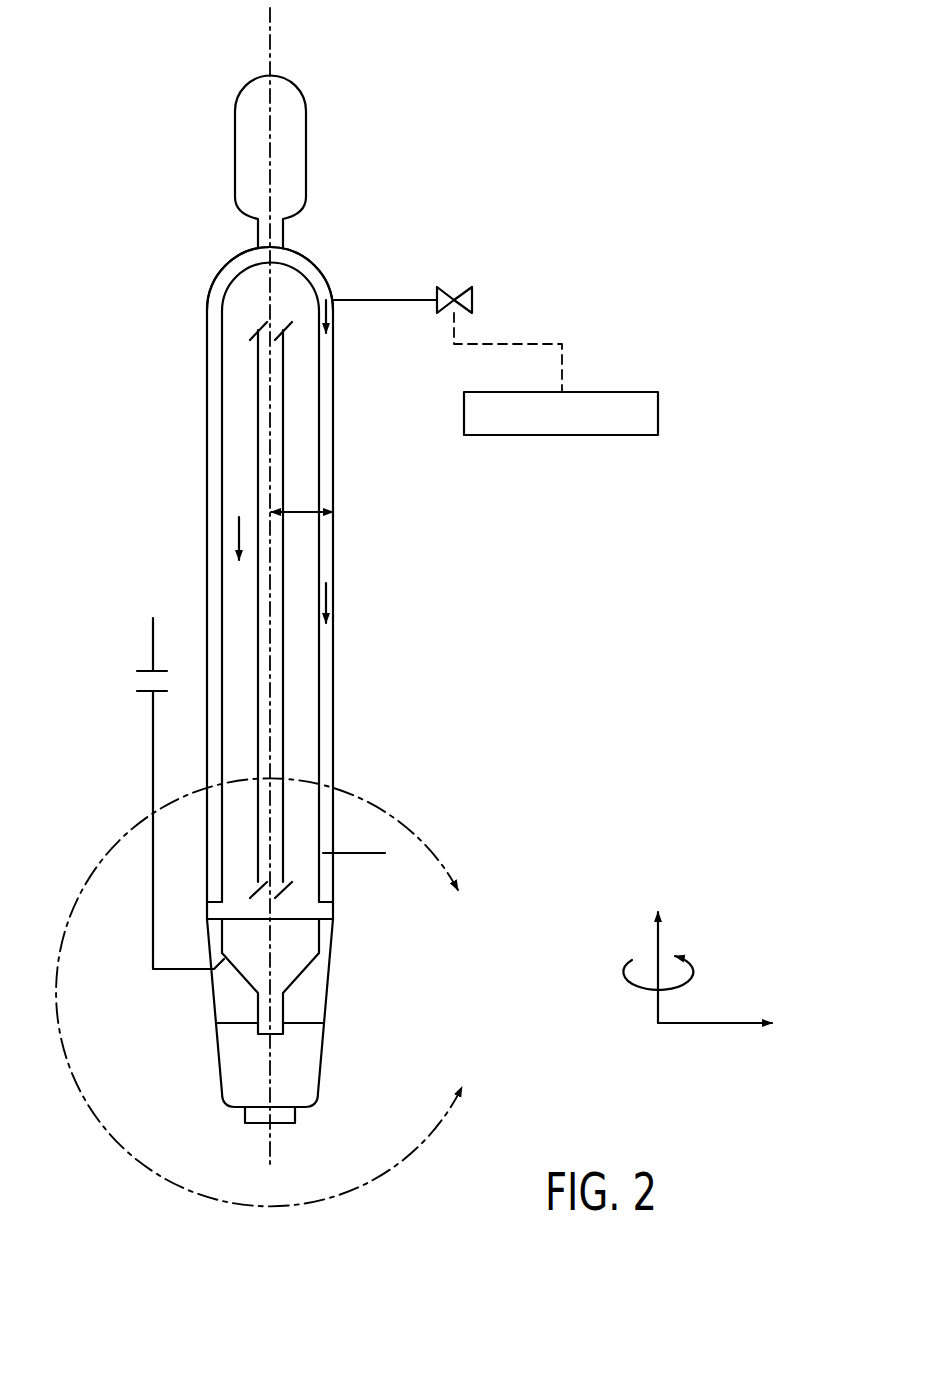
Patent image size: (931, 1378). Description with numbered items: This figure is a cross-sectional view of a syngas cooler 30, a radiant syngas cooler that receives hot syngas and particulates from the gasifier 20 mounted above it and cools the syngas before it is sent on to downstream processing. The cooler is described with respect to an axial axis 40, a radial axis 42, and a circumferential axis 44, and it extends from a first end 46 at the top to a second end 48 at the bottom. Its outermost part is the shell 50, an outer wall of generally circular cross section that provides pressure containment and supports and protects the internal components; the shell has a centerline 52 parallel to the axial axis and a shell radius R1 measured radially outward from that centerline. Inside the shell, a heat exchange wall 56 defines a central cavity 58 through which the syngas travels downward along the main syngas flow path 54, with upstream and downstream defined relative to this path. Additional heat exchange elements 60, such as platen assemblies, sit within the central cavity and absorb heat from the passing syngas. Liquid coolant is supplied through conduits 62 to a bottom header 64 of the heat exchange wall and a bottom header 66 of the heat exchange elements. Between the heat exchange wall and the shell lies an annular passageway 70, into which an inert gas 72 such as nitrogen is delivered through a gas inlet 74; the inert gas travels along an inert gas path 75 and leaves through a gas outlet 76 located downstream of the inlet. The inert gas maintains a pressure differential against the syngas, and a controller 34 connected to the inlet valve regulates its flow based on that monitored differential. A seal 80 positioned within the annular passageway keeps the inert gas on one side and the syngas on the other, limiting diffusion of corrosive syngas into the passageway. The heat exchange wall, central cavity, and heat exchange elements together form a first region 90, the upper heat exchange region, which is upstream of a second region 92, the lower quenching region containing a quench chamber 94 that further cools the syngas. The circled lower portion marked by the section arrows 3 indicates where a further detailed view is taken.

The section line 3- 3 is at (271, 992).
The gasifier 20 is at (306, 100).
The syngas cooler 30 is at (403, 669).
The controller 34 is at (658, 412).
The axial axis 40 is at (657, 938).
The radial axis 42 is at (725, 1025).
The circumferential axis 44 is at (638, 990).
The first end 46 is at (230, 257).
The second end 48 is at (232, 1100).
The shell 50 is at (333, 380).
The centerline 52 is at (273, 34).
The main syngas flow path 54 is at (232, 534).
The heat exchange wall 56 is at (319, 433).
The central cavity 58 is at (227, 648).
The heat exchange elements 60 is at (282, 752).
The conduits 62 is at (152, 747).
The header 64 is at (330, 967).
The header 66 is at (275, 896).
The annular passageway 70 is at (215, 333).
The inert gas 72 is at (333, 317).
The gas inlet 74 is at (413, 299).
The inert gas path 75 is at (328, 600).
The gas outlet 76 is at (355, 853).
The seal 80 is at (327, 909).
The first region 90 is at (150, 400).
The second region 92 is at (177, 1001).
The quench chamber 94 is at (358, 1065).
The shell radius R1 is at (303, 512).